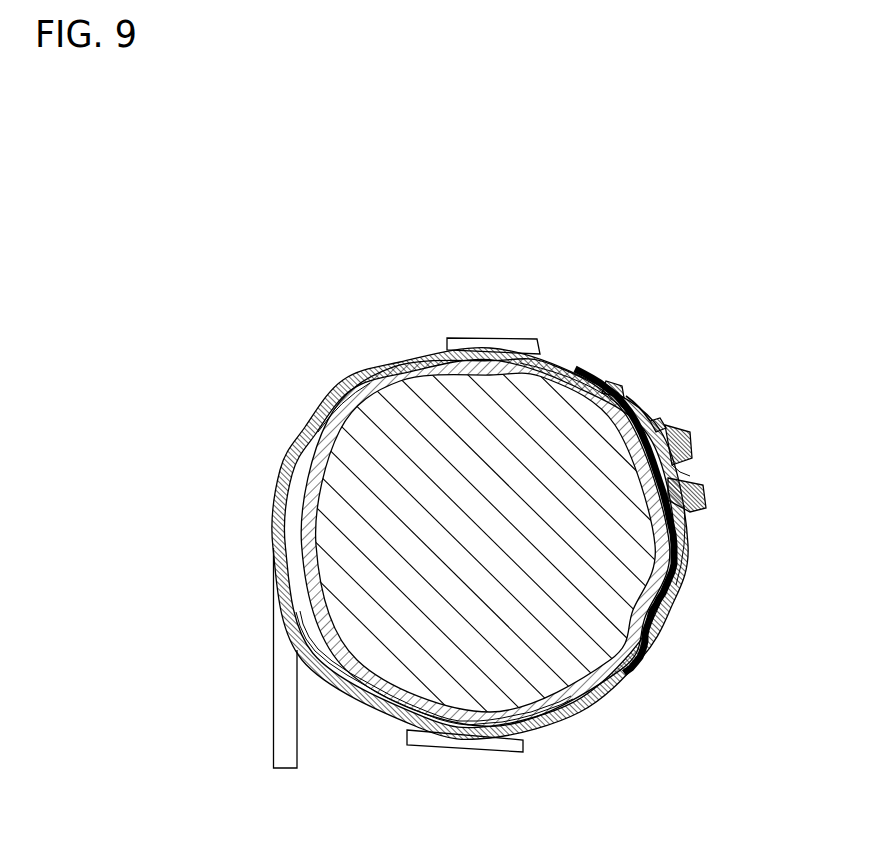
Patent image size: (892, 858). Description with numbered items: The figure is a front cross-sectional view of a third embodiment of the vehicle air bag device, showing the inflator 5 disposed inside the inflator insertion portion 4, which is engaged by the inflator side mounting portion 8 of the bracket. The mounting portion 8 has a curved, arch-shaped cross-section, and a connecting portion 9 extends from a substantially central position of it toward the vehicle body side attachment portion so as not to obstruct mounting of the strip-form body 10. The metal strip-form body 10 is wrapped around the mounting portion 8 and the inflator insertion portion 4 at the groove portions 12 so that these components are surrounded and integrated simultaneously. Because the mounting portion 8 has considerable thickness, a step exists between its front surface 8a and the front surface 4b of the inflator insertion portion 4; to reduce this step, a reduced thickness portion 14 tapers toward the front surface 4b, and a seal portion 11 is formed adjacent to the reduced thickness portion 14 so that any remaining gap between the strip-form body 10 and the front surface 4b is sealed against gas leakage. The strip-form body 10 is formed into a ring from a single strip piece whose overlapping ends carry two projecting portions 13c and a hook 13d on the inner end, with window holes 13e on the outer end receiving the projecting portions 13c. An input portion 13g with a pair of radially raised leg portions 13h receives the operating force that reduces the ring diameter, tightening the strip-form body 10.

The inflator insertion portion 4 is at (673, 603).
The front surface of the inflator insertion portion 4b is at (561, 366).
The inflator 5 is at (612, 640).
The inflator side mounting portion 8 is at (293, 466).
The front surface of the inflator side mounting portion 8a is at (357, 375).
The connecting portion 9 is at (298, 749).
The strip-form body 10 is at (702, 549).
The seal portion 11 is at (526, 338).
The groove portions 12 is at (447, 340).
The projecting portions 13c is at (638, 410).
The hook 13d is at (617, 380).
The window holes 13e is at (657, 427).
The input portion 13g is at (700, 465).
The leg portions 13h is at (688, 497).
The reduced thickness portion 14 is at (478, 348).